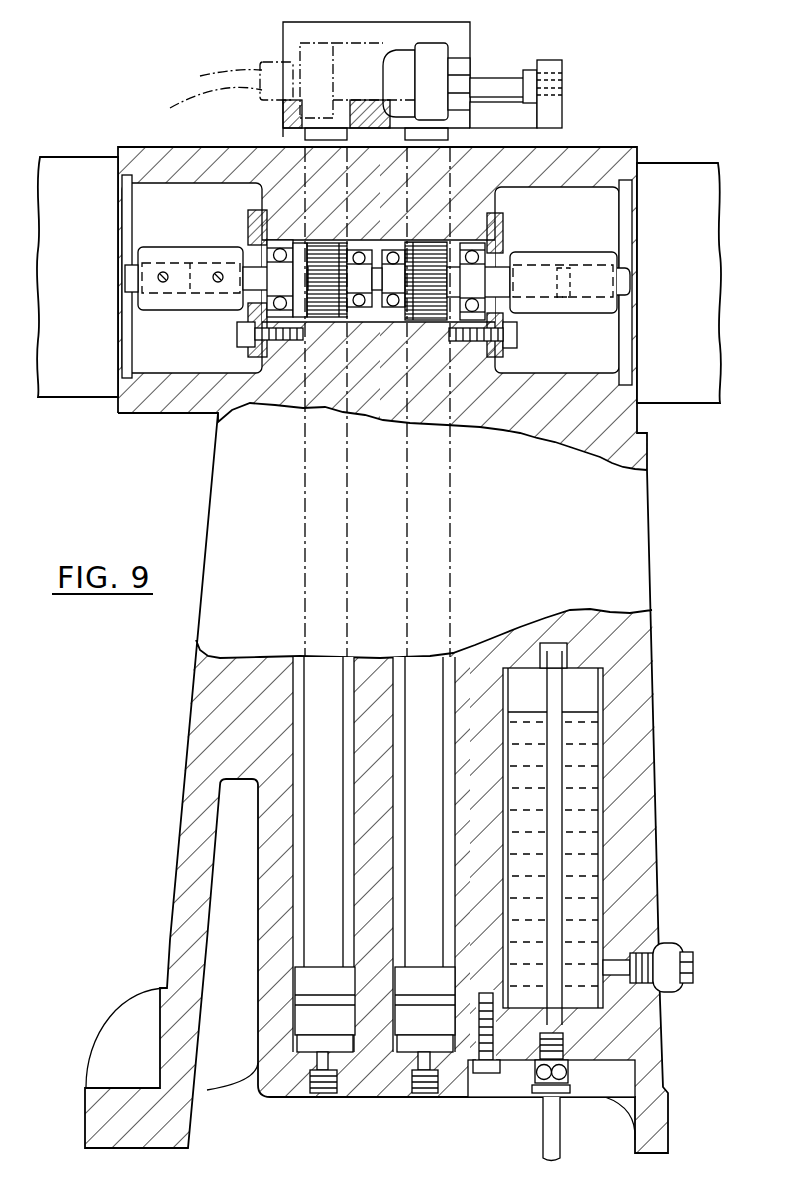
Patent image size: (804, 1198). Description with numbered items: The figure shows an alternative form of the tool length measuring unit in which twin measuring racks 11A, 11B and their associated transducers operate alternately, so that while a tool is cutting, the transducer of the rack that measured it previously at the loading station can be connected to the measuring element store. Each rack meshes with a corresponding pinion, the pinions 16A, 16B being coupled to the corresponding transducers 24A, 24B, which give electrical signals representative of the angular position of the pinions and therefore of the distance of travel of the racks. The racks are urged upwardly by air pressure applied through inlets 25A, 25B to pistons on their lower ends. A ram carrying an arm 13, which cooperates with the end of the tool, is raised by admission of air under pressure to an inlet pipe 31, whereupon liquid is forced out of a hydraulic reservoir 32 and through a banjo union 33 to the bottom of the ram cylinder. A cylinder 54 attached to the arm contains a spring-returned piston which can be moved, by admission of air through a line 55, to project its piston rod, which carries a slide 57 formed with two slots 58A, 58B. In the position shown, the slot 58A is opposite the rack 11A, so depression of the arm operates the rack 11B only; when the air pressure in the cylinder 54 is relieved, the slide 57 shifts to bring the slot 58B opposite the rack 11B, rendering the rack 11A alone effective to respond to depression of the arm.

The rack 11A is at (310, 638).
The rack 11B is at (438, 620).
The arm 13 is at (466, 80).
The pinion 16A is at (322, 280).
The pinion 16B is at (487, 262).
The transducer 24A is at (77, 386).
The transducer 24B is at (688, 388).
The inlet 25A is at (322, 1090).
The inlet 25B is at (425, 1090).
The inlet pipe 31 is at (587, 700).
The hydraulic reservoir 32 is at (587, 833).
The banjo union 33 is at (672, 953).
The cylinder 54 is at (432, 50).
The line 55 is at (202, 78).
The slide 57 is at (283, 110).
The slot 58A is at (316, 100).
The slot 58B is at (495, 112).